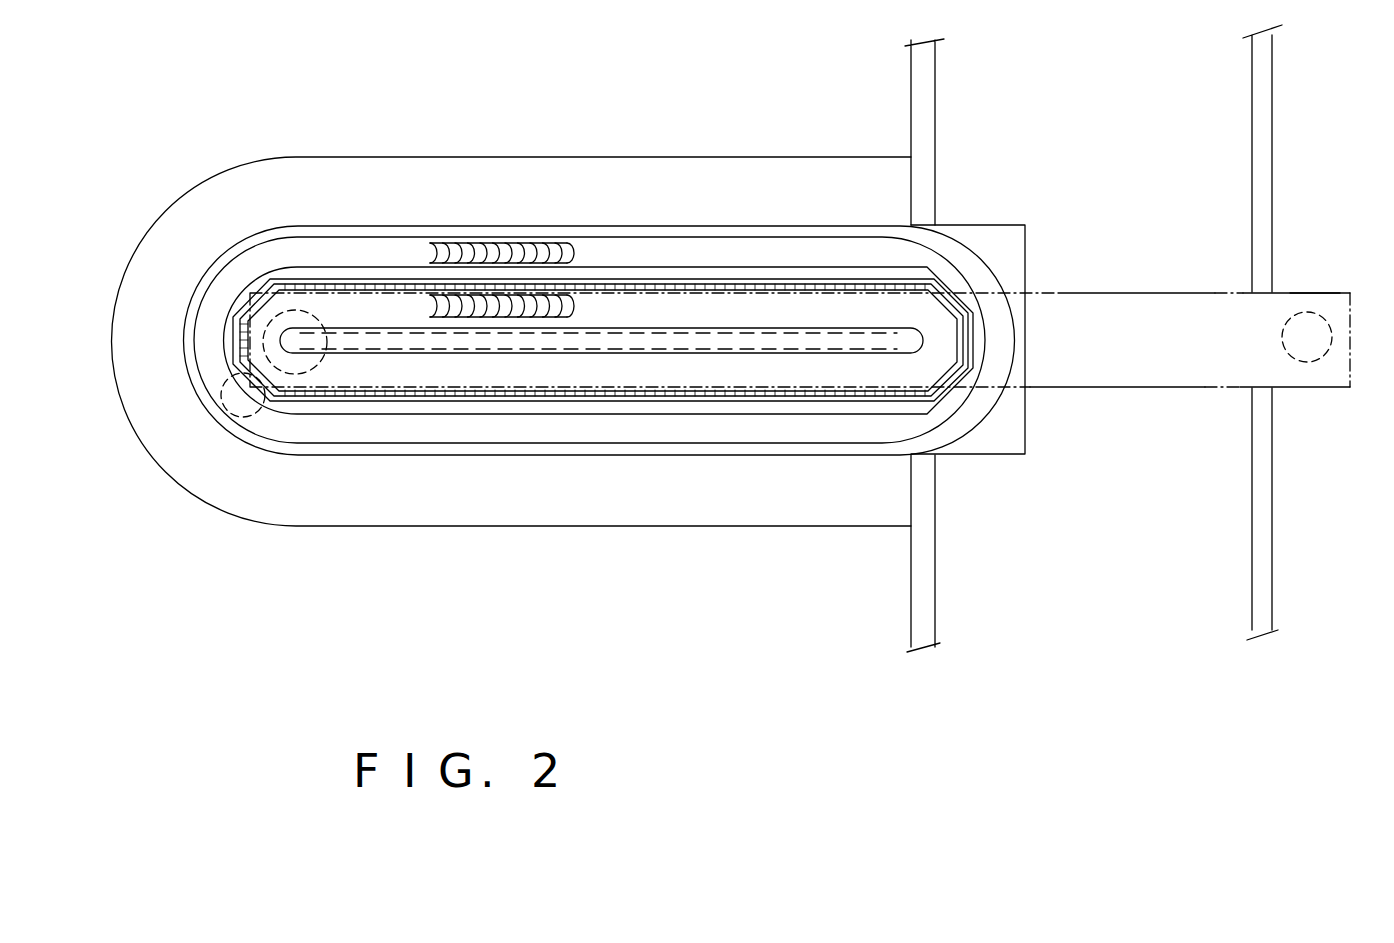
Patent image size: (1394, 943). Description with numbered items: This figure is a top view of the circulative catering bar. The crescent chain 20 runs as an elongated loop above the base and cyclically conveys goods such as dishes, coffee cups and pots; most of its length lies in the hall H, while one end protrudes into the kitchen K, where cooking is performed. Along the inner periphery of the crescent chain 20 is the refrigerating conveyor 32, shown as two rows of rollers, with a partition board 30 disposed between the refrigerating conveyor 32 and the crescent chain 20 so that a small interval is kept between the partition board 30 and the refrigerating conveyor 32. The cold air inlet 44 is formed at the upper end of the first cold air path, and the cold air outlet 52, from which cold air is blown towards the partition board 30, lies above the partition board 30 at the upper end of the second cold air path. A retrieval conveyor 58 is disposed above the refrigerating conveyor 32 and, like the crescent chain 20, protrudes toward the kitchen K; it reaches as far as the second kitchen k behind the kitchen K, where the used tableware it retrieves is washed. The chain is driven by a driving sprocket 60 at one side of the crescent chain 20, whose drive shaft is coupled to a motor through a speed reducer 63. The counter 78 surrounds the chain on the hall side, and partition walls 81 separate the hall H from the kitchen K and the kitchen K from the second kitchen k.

The crescent chain 20 is at (545, 226).
The partition board 30 is at (426, 401).
The refrigerating conveyor 32 is at (447, 243).
The cold air inlet 44 is at (352, 414).
The cold air outlet 52 is at (550, 357).
The retrieval conveyor 58 is at (1170, 398).
The driving sprocket 60 is at (280, 268).
The speed reducer 63 is at (1318, 292).
The counter 78 is at (277, 517).
The partition wall 81 is at (913, 628).
The hall H is at (765, 630).
The kitchen K is at (1092, 585).
The second kitchen k is at (1348, 602).